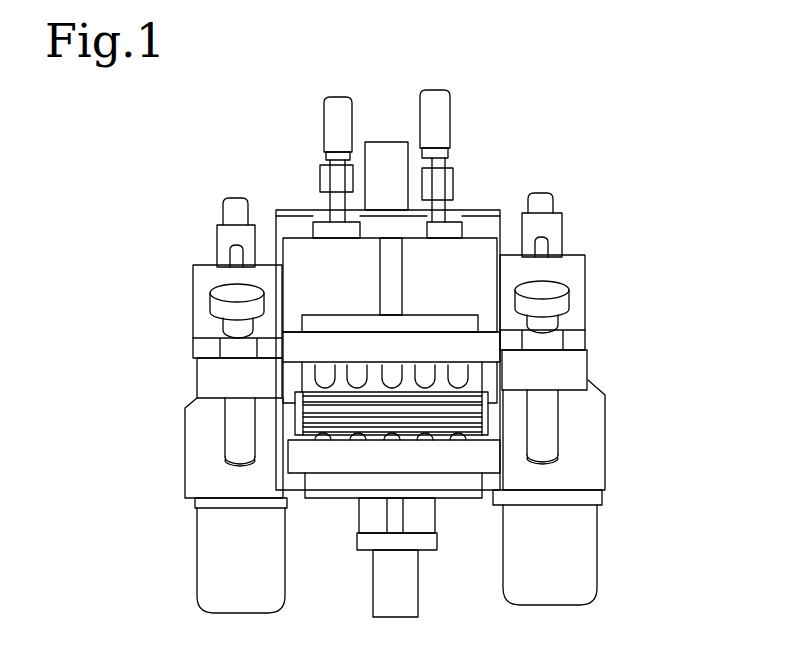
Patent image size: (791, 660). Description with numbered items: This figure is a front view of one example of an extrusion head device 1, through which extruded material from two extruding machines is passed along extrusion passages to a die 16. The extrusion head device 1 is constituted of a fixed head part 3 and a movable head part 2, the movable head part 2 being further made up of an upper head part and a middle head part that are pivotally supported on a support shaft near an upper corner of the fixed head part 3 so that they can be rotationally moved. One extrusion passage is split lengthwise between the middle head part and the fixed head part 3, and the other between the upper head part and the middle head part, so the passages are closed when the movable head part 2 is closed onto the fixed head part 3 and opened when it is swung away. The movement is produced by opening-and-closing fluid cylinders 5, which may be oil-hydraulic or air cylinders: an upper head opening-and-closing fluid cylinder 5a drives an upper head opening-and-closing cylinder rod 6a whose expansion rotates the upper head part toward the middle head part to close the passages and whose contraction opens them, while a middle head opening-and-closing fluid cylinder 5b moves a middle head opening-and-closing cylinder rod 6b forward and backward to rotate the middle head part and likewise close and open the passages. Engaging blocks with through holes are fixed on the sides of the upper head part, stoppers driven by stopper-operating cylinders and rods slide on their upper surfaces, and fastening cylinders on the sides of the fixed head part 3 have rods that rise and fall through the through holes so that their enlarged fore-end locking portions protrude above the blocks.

The extrusion head device 1 is at (643, 188).
The movable head part 2 is at (479, 249).
The fixed head part 3 is at (492, 477).
The opening-and-closing fluid cylinders 5 is at (430, 36).
The upper head opening-and-closing fluid cylinder 5a is at (336, 97).
The middle head opening-and-closing fluid cylinder 5b is at (437, 91).
The upper head opening-and-closing cylinder rod 6a is at (331, 186).
The middle head opening-and-closing cylinder rod 6b is at (440, 186).
The die 16 is at (343, 411).